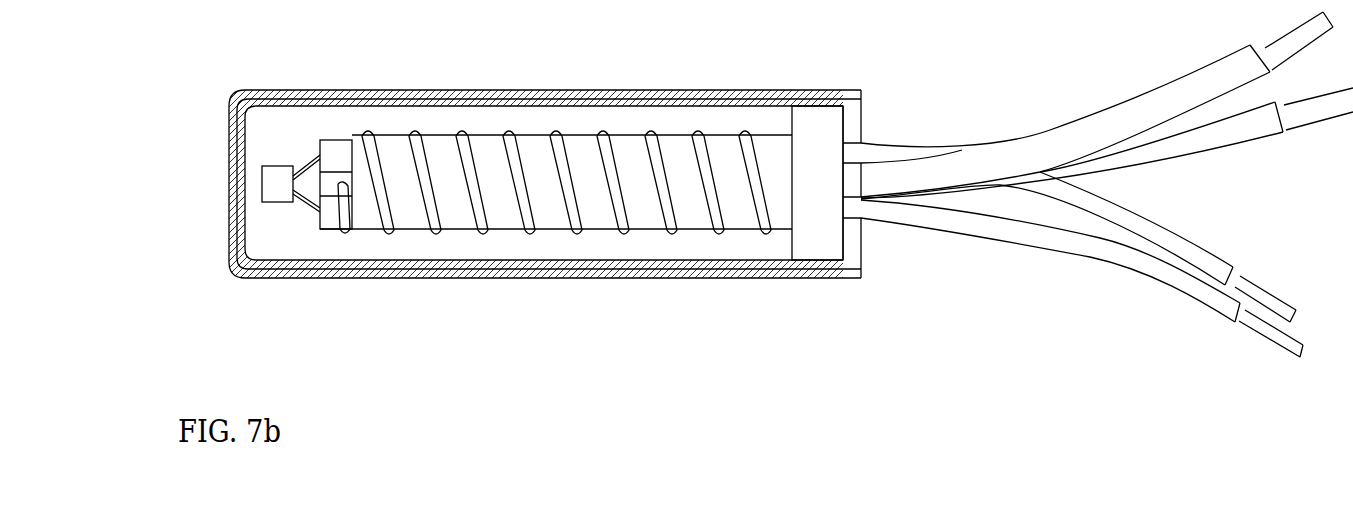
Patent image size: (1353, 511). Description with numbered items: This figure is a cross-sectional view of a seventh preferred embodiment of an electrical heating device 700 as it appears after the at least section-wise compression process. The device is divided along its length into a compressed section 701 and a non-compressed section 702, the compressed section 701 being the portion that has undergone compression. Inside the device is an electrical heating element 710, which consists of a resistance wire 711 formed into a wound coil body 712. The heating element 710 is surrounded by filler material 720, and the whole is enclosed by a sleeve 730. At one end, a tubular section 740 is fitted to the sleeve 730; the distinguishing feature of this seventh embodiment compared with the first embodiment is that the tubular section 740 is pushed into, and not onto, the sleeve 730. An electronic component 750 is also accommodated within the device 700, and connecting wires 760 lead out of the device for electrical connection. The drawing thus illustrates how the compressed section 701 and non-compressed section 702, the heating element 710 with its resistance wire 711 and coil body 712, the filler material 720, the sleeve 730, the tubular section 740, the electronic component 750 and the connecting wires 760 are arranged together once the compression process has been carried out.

The electrical heating device 700 is at (397, 279).
The compressed section 701 is at (316, 90).
The non-compressed section 702 is at (859, 90).
The electrical heating element 710 is at (652, 232).
The resistance wire 711 is at (488, 233).
The wound coil body 712 is at (593, 193).
The filler material 720 is at (331, 263).
The sleeve 730 is at (281, 280).
The tubular section 740 is at (715, 265).
The electronic component 750 is at (266, 195).
The connecting wires 760 is at (893, 173).